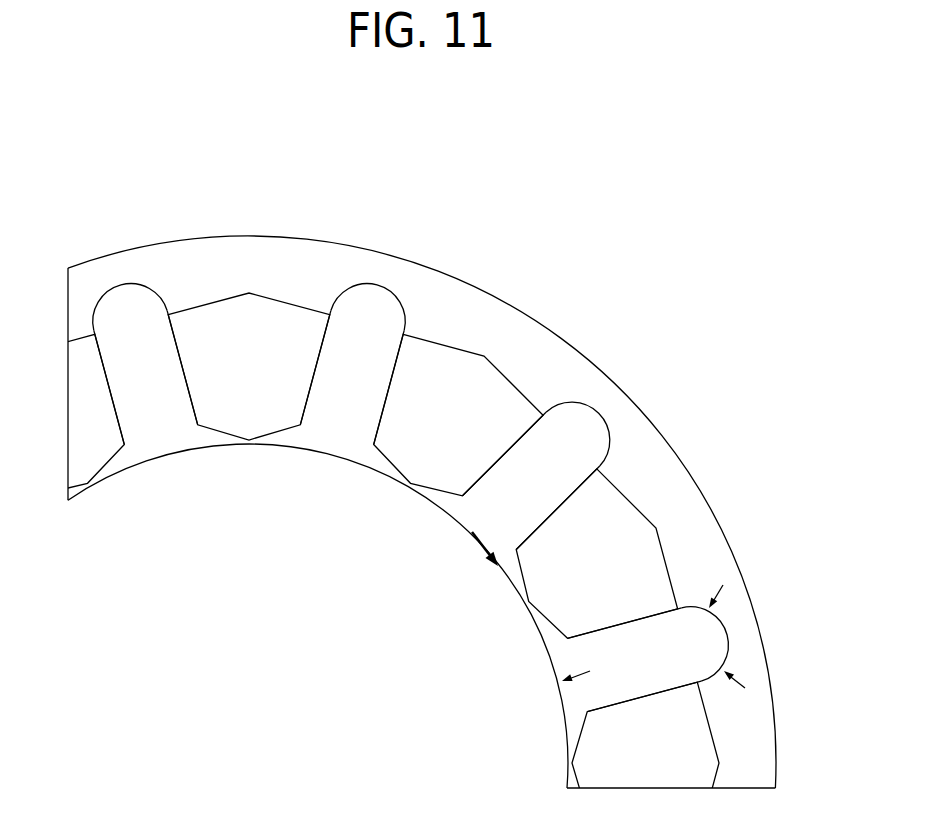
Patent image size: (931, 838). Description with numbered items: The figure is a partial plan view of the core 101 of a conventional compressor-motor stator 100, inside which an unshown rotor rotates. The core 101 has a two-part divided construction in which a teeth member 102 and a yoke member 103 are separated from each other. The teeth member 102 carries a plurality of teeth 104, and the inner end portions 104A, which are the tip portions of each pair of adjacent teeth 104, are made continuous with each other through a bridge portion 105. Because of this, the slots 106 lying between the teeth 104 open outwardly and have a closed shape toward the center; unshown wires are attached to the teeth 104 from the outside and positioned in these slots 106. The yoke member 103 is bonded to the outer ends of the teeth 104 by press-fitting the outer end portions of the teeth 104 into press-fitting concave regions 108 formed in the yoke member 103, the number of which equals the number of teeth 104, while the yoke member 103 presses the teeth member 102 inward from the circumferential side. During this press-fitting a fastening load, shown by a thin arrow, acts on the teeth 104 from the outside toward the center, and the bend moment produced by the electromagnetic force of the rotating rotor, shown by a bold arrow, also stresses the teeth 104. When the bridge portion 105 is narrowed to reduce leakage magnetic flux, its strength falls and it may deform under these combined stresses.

The stator 100 is at (523, 228).
The core 101 is at (543, 324).
The teeth member 102 is at (398, 313).
The yoke member 103 is at (700, 520).
The teeth 104 is at (174, 331).
The inner end portions 104A is at (167, 457).
The bridge portion 105 is at (91, 487).
The slots 106 is at (76, 446).
The press-fitting concave regions 108 is at (119, 283).